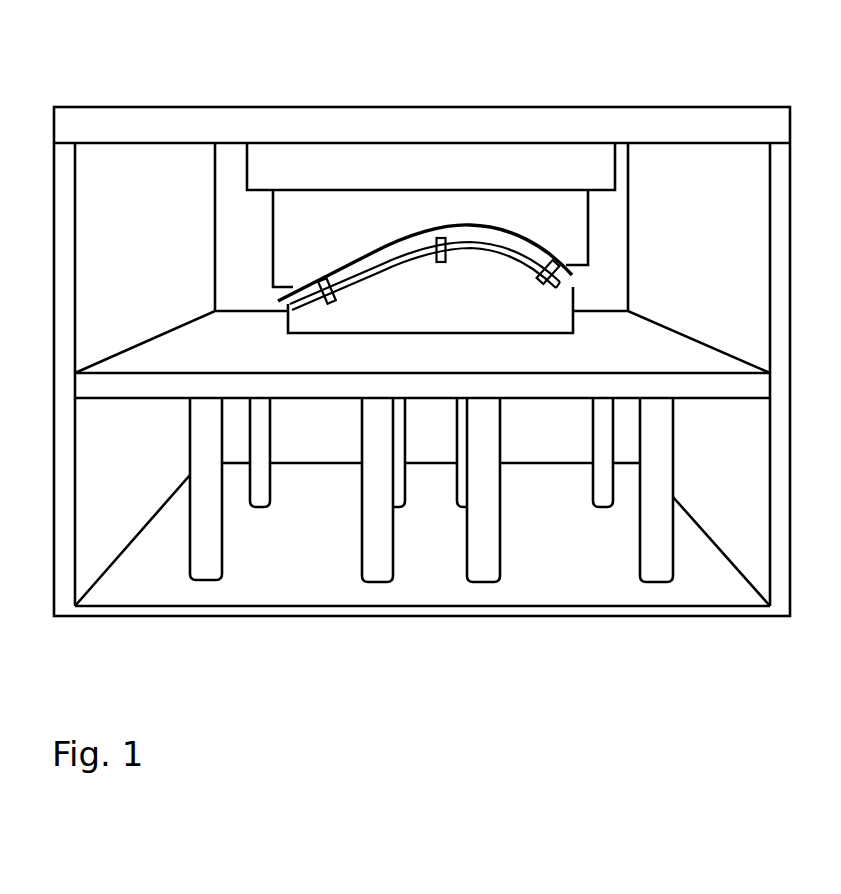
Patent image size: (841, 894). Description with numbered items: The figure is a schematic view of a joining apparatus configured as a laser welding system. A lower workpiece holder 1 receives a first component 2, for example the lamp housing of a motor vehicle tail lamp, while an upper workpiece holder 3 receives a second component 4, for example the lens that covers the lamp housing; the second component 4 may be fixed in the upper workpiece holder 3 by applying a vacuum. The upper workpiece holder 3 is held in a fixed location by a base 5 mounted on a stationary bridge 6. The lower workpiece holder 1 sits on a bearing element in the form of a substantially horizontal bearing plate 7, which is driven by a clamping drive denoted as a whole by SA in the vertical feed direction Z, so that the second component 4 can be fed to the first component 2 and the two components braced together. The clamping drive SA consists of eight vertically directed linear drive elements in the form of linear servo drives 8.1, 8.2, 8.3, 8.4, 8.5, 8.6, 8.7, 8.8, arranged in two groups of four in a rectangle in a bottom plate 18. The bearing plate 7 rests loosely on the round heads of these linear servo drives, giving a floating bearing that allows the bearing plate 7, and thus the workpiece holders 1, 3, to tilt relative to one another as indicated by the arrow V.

The lower workpiece holder 1 is at (353, 302).
The first component 2 is at (387, 257).
The upper workpiece holder 3 is at (408, 207).
The second component 4 is at (480, 232).
The base 5 is at (515, 157).
The stationary bridge 6 is at (582, 122).
The bearing plate 7 is at (633, 338).
The linear servo drive 8.1 is at (210, 567).
The linear servo drive 8.2 is at (372, 572).
The linear servo drive 8.3 is at (483, 575).
The linear servo drive 8.4 is at (662, 575).
The linear servo drive 8.5 is at (258, 495).
The linear servo drive 8.6 is at (398, 505).
The linear servo drive 8.7 is at (458, 505).
The linear servo drive 8.8 is at (605, 497).
The bottom plate 18 is at (568, 592).
The clamping drive SA is at (160, 450).
The tilting arrow V is at (120, 440).
The vertical feed direction Z is at (552, 364).